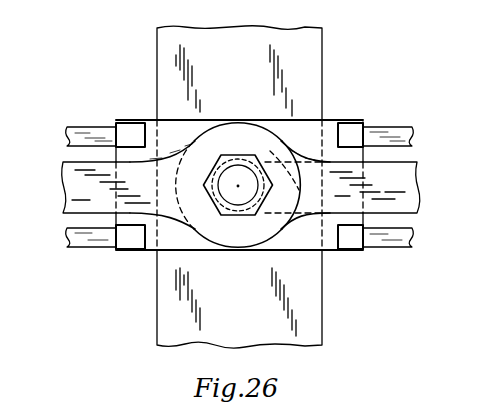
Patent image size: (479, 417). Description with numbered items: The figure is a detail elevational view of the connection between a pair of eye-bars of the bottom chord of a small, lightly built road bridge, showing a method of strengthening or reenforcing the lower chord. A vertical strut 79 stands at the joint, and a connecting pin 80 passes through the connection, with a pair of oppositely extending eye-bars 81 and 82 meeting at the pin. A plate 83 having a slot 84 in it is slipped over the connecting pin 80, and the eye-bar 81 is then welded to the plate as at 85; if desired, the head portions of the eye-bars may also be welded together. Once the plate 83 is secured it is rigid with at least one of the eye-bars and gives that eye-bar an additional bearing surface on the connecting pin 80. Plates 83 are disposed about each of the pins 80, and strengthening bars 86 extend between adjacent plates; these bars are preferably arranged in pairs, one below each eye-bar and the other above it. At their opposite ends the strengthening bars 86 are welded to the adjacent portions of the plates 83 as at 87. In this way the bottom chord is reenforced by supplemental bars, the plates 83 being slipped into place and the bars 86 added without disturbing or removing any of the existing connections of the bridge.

The vertical strut 79 is at (308, 53).
The connecting pin 80 is at (234, 180).
The eye-bar 81 is at (407, 180).
The eye-bar 82 is at (68, 185).
The plate 83 is at (328, 122).
The slot 84 is at (297, 188).
The weld 85 is at (265, 128).
The strengthening bar 86 is at (85, 128).
The weld 87 is at (128, 124).